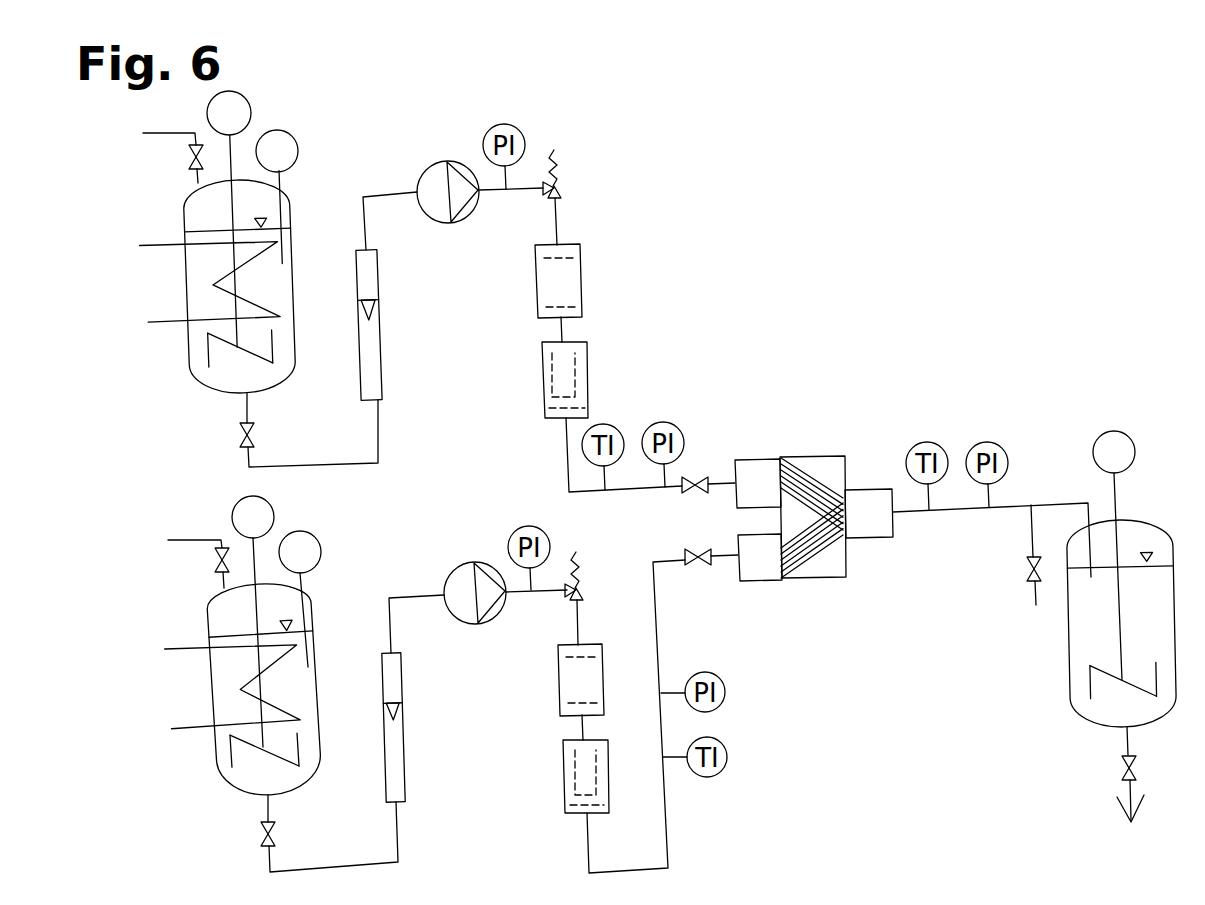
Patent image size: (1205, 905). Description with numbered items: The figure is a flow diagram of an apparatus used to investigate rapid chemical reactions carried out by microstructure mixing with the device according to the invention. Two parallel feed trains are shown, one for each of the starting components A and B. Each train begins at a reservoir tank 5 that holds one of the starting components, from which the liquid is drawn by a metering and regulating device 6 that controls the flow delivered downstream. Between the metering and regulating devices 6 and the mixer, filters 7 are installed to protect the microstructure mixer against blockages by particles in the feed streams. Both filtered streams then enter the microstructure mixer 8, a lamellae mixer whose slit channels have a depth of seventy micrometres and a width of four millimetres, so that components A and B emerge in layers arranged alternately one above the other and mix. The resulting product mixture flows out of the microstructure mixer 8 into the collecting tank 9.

The reservoir tank 5 is at (223, 374).
The metering and regulating device 6 is at (441, 212).
The filter 7 is at (557, 380).
The microstructure mixer 8 is at (835, 562).
The collecting tank 9 is at (1090, 638).